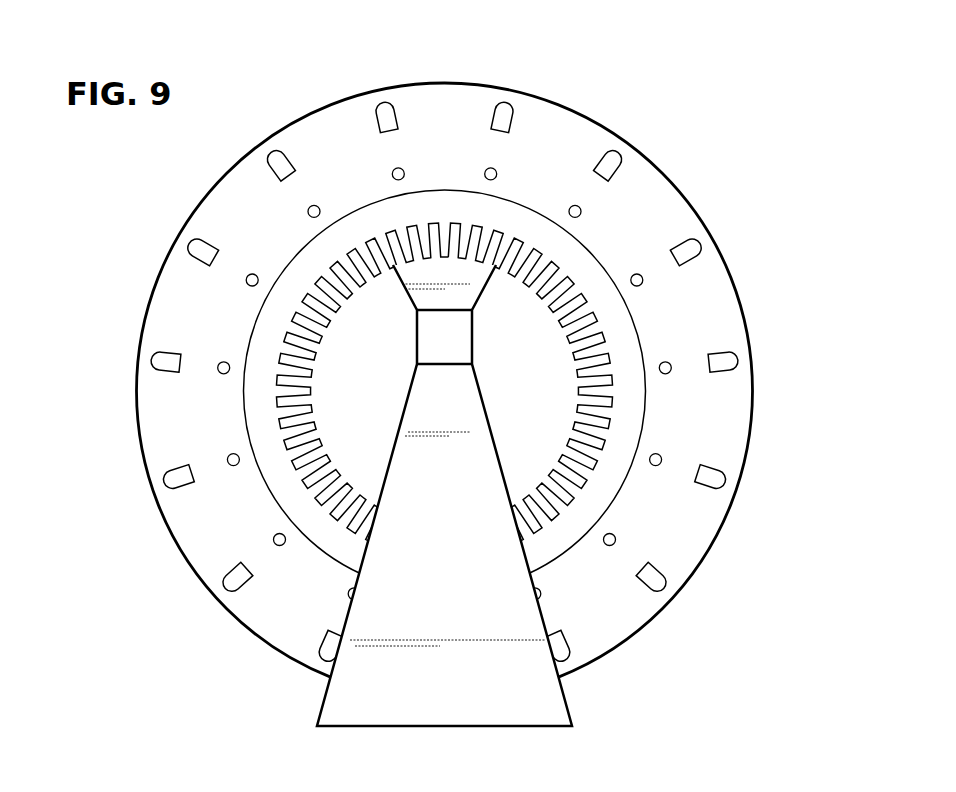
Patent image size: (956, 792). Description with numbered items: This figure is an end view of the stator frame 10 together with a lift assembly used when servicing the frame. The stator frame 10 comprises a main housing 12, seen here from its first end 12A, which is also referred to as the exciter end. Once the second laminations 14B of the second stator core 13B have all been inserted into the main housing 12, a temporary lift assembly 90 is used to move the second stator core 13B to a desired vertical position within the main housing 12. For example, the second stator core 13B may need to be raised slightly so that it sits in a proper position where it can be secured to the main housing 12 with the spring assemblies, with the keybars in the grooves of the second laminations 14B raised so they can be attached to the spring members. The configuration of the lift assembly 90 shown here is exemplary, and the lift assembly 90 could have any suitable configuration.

The stator frame 10 is at (478, 70).
The main housing 12 is at (587, 102).
The first end 12A is at (630, 187).
The second stator core 13B is at (620, 502).
The second laminations 14B is at (633, 413).
The temporary lift assembly 90 is at (433, 576).